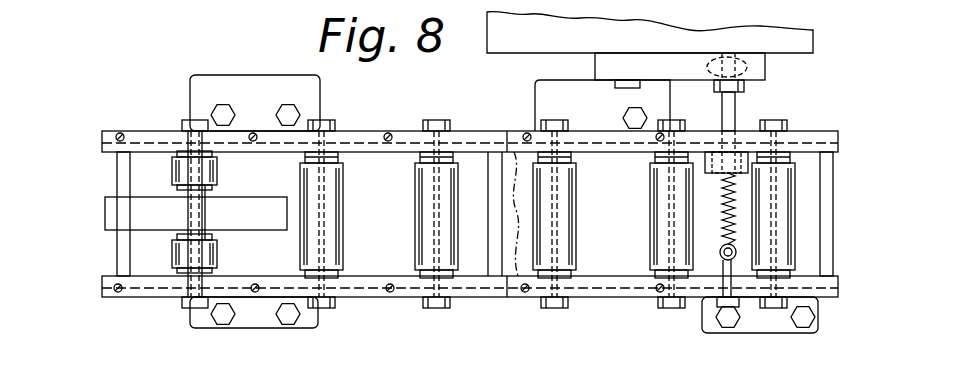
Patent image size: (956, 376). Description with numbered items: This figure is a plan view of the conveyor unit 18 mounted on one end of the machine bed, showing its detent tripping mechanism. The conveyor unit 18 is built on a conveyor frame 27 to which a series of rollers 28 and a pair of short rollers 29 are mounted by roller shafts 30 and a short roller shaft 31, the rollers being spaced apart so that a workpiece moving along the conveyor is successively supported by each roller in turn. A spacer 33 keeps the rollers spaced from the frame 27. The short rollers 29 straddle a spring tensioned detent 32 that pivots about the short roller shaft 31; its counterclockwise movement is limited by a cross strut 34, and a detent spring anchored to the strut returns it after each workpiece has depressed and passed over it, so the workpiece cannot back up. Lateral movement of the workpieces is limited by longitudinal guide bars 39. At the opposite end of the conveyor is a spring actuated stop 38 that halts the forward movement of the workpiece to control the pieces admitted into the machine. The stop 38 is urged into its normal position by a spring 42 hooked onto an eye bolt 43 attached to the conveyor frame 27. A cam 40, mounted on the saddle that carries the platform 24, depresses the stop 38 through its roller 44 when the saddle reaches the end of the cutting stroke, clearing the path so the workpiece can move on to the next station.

The conveyor unit 18 is at (373, 125).
The platform 24 is at (493, 34).
The conveyor frame 27 is at (474, 223).
The roller 28 is at (422, 185).
The short roller 29 is at (172, 171).
The roller shaft 30 is at (548, 285).
The short roller shaft 31 is at (210, 237).
The detent 32 is at (140, 198).
The spacer 33 is at (188, 150).
The cross strut 34 is at (120, 246).
The spring actuated stop 38 is at (735, 103).
The longitudinal guide bar 39 is at (460, 135).
The cam 40 is at (766, 78).
The spring 42 is at (735, 230).
The eye bolt 43 is at (735, 268).
The roller 44 is at (748, 67).